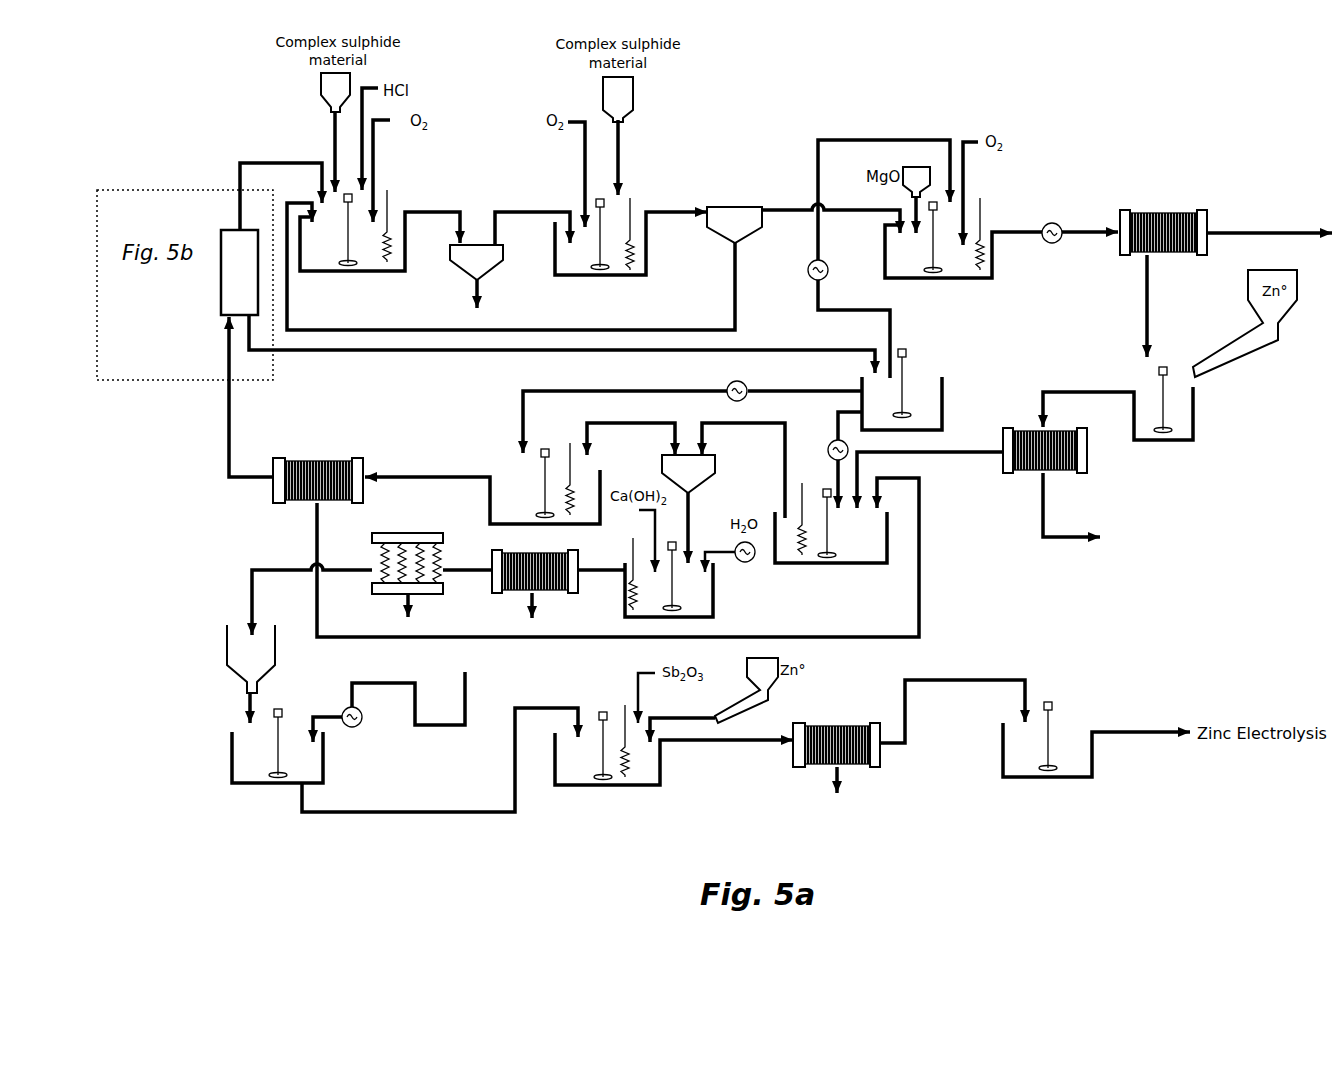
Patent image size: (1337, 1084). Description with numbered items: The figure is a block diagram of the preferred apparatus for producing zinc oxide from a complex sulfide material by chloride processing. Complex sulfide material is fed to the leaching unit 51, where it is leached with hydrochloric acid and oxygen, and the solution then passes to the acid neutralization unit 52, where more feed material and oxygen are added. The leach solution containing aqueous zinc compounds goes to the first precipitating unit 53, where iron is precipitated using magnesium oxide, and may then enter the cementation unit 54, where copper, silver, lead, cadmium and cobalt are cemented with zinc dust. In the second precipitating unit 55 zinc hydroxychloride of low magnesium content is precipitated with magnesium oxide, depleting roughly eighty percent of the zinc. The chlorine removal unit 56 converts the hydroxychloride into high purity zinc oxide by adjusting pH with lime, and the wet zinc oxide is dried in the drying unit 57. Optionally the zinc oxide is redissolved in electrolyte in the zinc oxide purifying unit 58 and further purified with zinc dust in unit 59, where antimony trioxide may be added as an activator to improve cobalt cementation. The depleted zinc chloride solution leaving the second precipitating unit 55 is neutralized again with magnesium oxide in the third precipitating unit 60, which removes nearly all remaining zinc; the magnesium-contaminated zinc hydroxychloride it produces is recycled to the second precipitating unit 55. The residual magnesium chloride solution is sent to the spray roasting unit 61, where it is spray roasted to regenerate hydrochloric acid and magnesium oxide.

The leaching unit 51 is at (378, 268).
The acid neutralization unit 52 is at (577, 268).
The first precipitating unit 53 is at (958, 272).
The cementation unit 54 is at (1183, 435).
The second precipitating unit 55 is at (872, 556).
The chlorine removal unit 56 is at (703, 598).
The drying unit 57 is at (395, 588).
The zinc oxide purifying unit 58 is at (243, 772).
The zinc dust purifying unit 59 is at (652, 777).
The third precipitating unit 60 is at (512, 487).
The spray roasting unit 61 is at (227, 288).